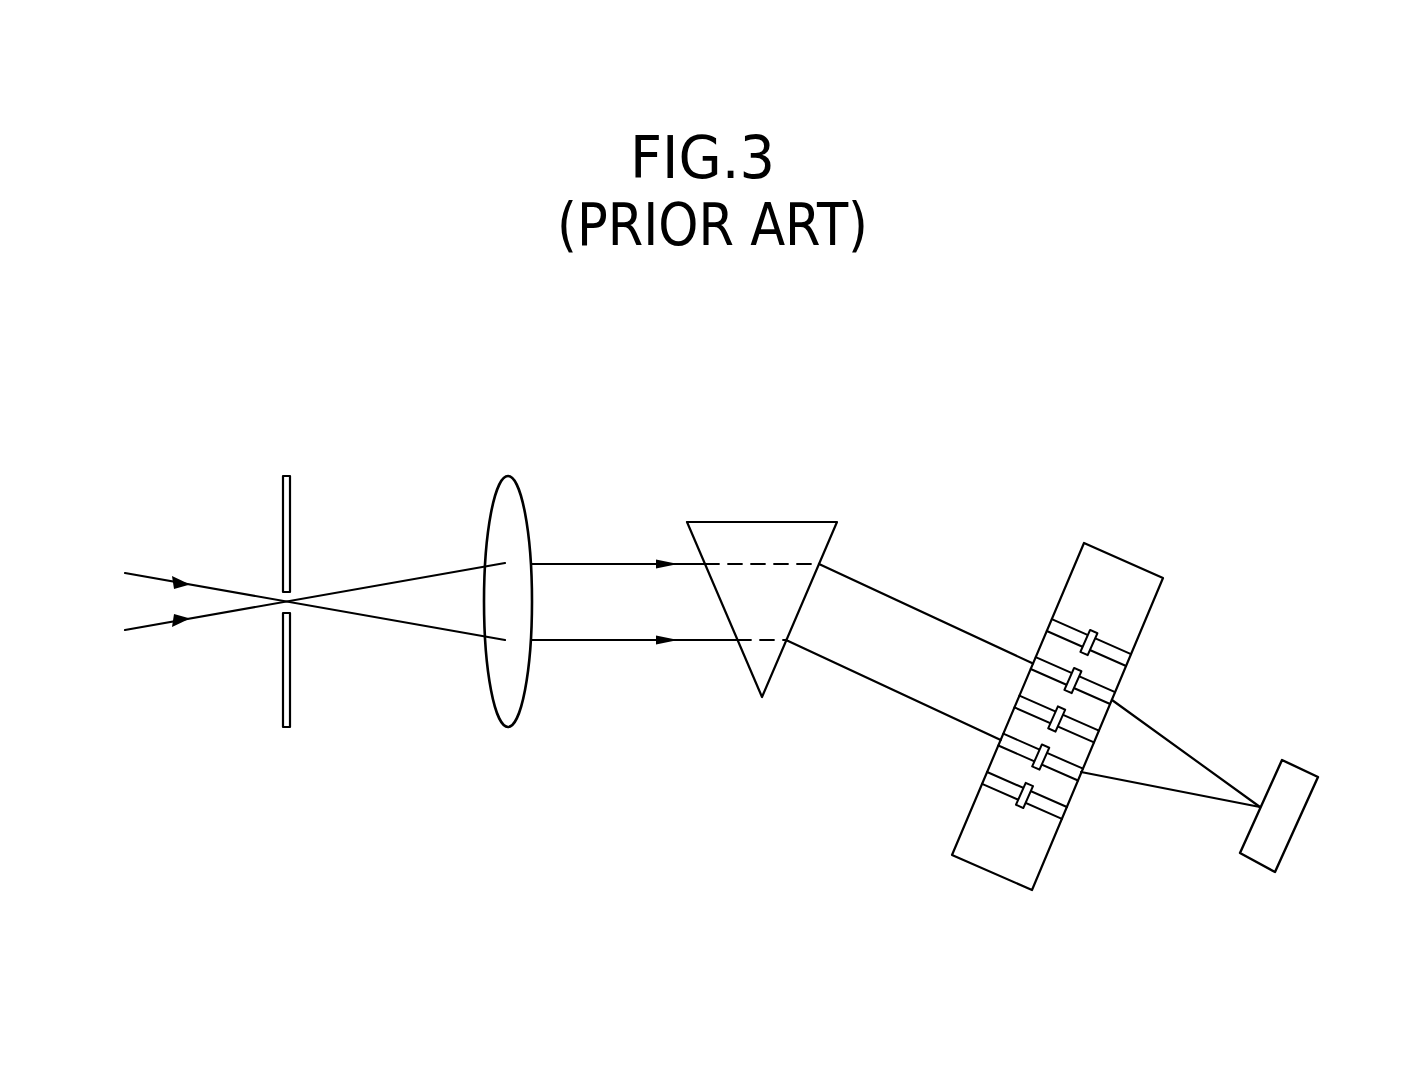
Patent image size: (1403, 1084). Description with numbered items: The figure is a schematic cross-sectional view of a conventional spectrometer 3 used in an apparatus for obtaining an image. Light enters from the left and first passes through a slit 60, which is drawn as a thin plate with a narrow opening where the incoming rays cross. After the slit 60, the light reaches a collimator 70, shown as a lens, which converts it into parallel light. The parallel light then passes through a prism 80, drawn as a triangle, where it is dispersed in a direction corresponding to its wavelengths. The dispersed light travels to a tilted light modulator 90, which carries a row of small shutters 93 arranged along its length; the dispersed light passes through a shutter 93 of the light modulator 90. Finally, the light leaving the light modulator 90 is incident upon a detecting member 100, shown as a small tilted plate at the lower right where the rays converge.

The spectrometer 3 is at (899, 451).
The slit 60 is at (290, 717).
The collimator 70 is at (517, 708).
The prism 80 is at (770, 672).
The light modulator 90 is at (1080, 572).
The shutter 93 is at (1080, 665).
The detecting member 100 is at (1278, 830).